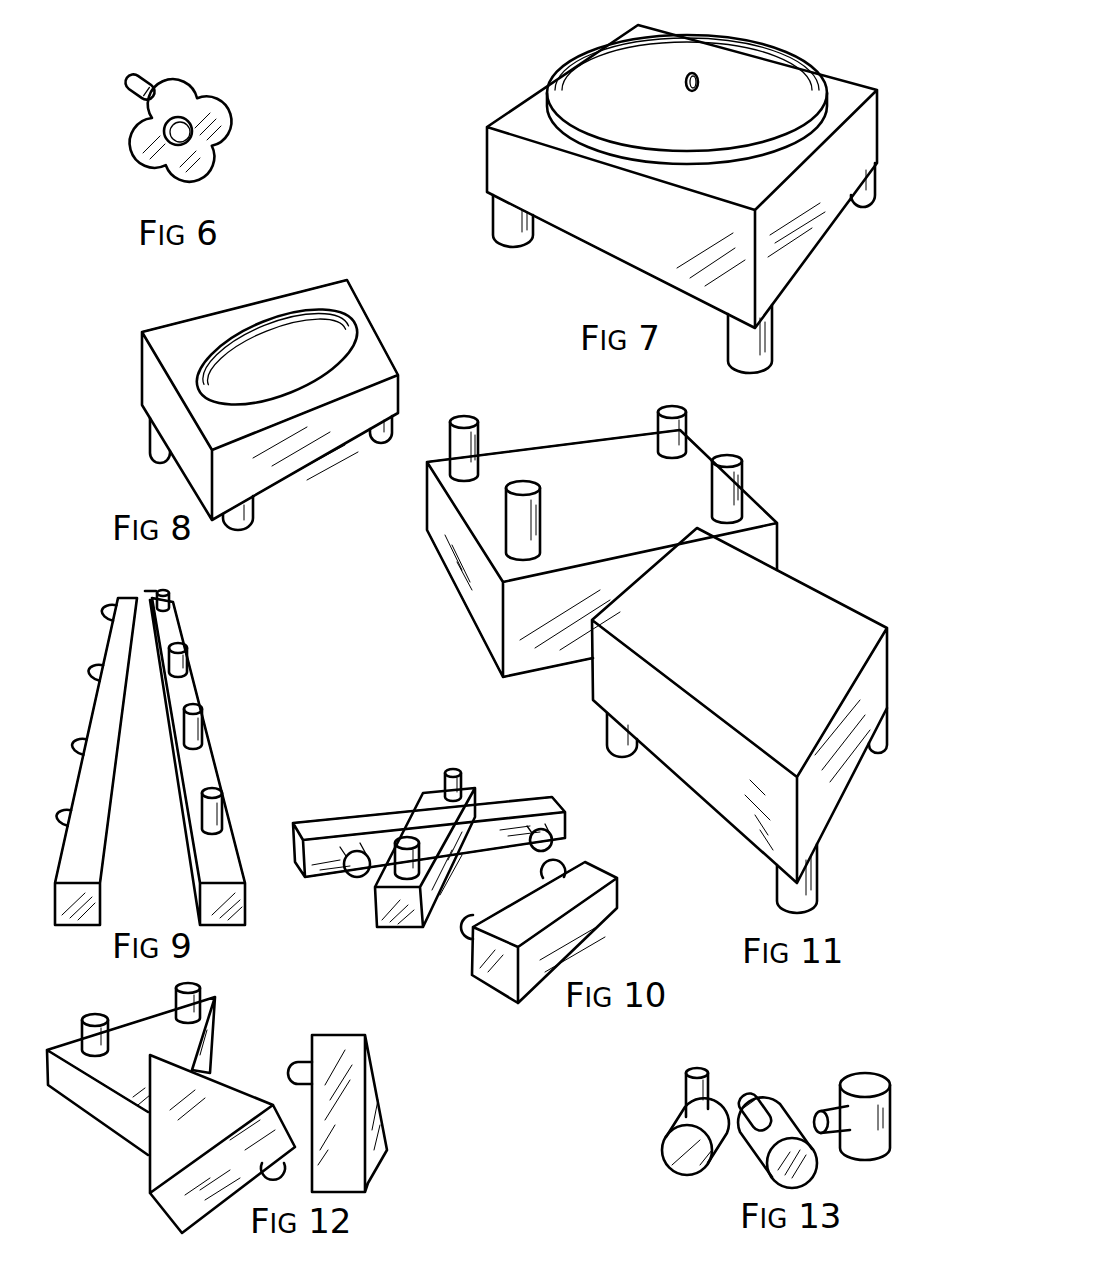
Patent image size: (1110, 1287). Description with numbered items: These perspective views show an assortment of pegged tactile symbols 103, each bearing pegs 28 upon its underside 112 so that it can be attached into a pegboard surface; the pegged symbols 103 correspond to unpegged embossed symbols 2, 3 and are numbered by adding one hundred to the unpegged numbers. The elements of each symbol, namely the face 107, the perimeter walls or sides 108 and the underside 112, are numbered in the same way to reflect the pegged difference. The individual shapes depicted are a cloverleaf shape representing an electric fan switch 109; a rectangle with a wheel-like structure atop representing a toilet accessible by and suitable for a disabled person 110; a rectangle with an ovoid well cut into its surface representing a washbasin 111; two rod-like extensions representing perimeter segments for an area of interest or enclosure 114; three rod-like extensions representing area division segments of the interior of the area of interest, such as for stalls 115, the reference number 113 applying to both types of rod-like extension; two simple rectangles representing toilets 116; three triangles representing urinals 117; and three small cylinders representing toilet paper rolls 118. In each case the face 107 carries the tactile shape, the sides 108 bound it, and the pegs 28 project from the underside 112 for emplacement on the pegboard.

In FIG. 6, the unpegged embossed symbol 2 is at (236, 130).
In FIG. 7, the unpegged embossed symbol 2 is at (615, 176).
In FIG. 8, the unpegged embossed symbol 2 is at (325, 400).
In FIG. 9, the unpegged embossed symbol 2 is at (187, 778).
In FIG. 10, the unpegged embossed symbol 2 is at (449, 895).
In FIG. 11, the unpegged embossed symbol 2 is at (657, 656).
In FIG. 12, the unpegged embossed symbol 2 is at (131, 1087).
In FIG. 13, the unpegged embossed symbol 2 is at (694, 1160).
In FIG. 6, the unpegged embossed symbol 3 is at (236, 130).
In FIG. 7, the unpegged embossed symbol 3 is at (615, 176).
In FIG. 8, the unpegged embossed symbol 3 is at (325, 400).
In FIG. 9, the unpegged embossed symbol 3 is at (187, 778).
In FIG. 10, the unpegged embossed symbol 3 is at (449, 895).
In FIG. 11, the unpegged embossed symbol 3 is at (657, 656).
In FIG. 12, the unpegged embossed symbol 3 is at (131, 1087).
In FIG. 13, the unpegged embossed symbol 3 is at (694, 1160).
In FIG. 6, the pegged tactile symbol 103 is at (230, 105).
In FIG. 7, the pegged tactile symbol 103 is at (505, 110).
In FIG. 8, the pegged tactile symbol 103 is at (388, 397).
In FIG. 9, the pegged tactile symbol 103 is at (240, 860).
In FIG. 10, the pegged tactile symbol 103 is at (327, 873).
In FIG. 11, the pegged tactile symbol 103 is at (760, 500).
In FIG. 12, the pegged tactile symbol 103 is at (100, 1123).
In FIG. 13, the pegged tactile symbol 103 is at (687, 1170).
In FIG. 6, the peg 28 is at (122, 83).
In FIG. 7, the peg 28 is at (505, 220).
In FIG. 8, the peg 28 is at (242, 518).
In FIG. 9, the peg 28 is at (213, 813).
In FIG. 10, the peg 28 is at (450, 768).
In FIG. 11, the peg 28 is at (473, 415).
In FIG. 12, the peg 28 is at (205, 980).
In FIG. 13, the peg 28 is at (697, 1068).
In FIG. 6, the face of pegged symbol 107 is at (200, 165).
In FIG. 7, the face of pegged symbol 107 is at (608, 85).
In FIG. 8, the face of pegged symbol 107 is at (178, 342).
In FIG. 9, the face of pegged symbol 107 is at (107, 867).
In FIG. 10, the face of pegged symbol 107 is at (608, 903).
In FIG. 11, the face of pegged symbol 107 is at (753, 600).
In FIG. 12, the face of pegged symbol 107 is at (372, 1106).
In FIG. 13, the face of pegged symbol 107 is at (683, 1167).
In FIG. 6, the perimeter walls or sides of pegged symbol 108 is at (157, 70).
In FIG. 7, the perimeter walls or sides of pegged symbol 108 is at (557, 183).
In FIG. 8, the perimeter walls or sides of pegged symbol 108 is at (320, 447).
In FIG. 9, the perimeter walls or sides of pegged symbol 108 is at (118, 602).
In FIG. 10, the perimeter walls or sides of pegged symbol 108 is at (405, 822).
In FIG. 11, the perimeter walls or sides of pegged symbol 108 is at (458, 558).
In FIG. 6, the cloverleaf-shaped pegged symbol 109 is at (170, 92).
In FIG. 7, the pegged rectangle with wheel-like structure 110 is at (717, 60).
In FIG. 8, the pegged rectangle with ovoid well 111 is at (173, 421).
In FIG. 9, the underside of pegged symbol 112 is at (200, 763).
In FIG. 10, the underside of pegged symbol 112 is at (467, 830).
In FIG. 11, the underside of pegged symbol 112 is at (645, 505).
In FIG. 12, the underside of pegged symbol 112 is at (140, 1035).
In FIG. 13, the underside of pegged symbol 112 is at (840, 1094).
In FIG. 9, the pegged rod-like extension 113 is at (220, 740).
In FIG. 10, the pegged rod-like extension 113 is at (462, 825).
In FIG. 9, the pegged perimeter segment 114 is at (180, 625).
In FIG. 10, the pegged area division segment 115 is at (513, 808).
In FIG. 11, the pegged simple rectangle 116 is at (593, 697).
In FIG. 12, the pegged triangle 117 is at (197, 1113).
In FIG. 13, the pegged small cylinder 118 is at (746, 1093).